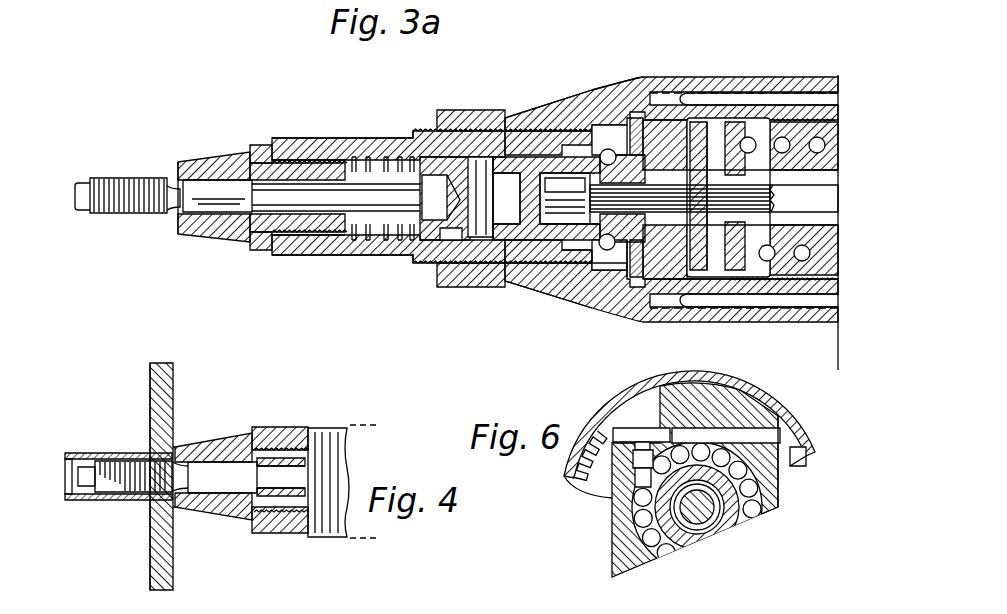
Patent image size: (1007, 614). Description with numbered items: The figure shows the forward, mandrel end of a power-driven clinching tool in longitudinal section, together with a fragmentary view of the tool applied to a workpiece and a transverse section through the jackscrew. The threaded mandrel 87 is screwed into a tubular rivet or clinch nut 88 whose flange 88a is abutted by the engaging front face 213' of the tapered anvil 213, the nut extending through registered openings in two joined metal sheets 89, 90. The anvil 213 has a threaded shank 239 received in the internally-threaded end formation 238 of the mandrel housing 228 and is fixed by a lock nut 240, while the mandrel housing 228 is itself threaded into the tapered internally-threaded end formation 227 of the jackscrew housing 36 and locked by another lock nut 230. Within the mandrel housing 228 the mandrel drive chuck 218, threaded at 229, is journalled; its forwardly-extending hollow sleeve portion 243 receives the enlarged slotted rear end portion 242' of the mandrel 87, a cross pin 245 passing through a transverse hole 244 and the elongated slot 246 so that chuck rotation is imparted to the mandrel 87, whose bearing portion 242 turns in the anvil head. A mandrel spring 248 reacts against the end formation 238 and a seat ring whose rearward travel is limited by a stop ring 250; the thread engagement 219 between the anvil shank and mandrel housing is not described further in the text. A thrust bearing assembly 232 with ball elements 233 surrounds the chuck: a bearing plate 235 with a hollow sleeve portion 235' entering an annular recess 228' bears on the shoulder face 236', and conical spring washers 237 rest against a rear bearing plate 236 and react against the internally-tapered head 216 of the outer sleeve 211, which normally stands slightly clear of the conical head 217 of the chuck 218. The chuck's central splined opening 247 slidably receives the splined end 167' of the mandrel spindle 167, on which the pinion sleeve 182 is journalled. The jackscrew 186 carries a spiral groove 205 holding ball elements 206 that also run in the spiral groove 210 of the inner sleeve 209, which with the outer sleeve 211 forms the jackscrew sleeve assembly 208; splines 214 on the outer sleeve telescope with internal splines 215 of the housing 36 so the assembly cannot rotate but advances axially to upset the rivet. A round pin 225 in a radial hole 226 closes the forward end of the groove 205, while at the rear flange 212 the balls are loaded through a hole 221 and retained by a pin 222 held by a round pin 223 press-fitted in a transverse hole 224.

In FIG. 3A, the jackscrew housing 36 is at (732, 72).
In FIG. 6, the jackscrew housing 36 is at (810, 414).
In FIG. 3A, the threaded mandrel 87 is at (110, 205).
In FIG. 4, the threaded mandrel 87 is at (224, 487).
In FIG. 4, the rivet or clinch nut 88 is at (105, 451).
In FIG. 4, the flange of the rivet or clinch nut 88a is at (180, 446).
In FIG. 4, the metal sheet 89 is at (150, 380).
In FIG. 4, the metal sheet 90 is at (173, 385).
In FIG. 6, the mandrel spindle 167 is at (678, 547).
In FIG. 3A, the splined end of the mandrel spindle 167' is at (714, 199).
In FIG. 3A, the pinion sleeve 182 is at (835, 238).
In FIG. 6, the pinion sleeve 182 is at (712, 534).
In FIG. 3A, the jackscrew 186 is at (790, 282).
In FIG. 6, the jackscrew 186 is at (742, 514).
In FIG. 3A, the spiral groove 205 is at (832, 291).
In FIG. 3A, the ball elements 206 is at (825, 145).
In FIG. 6, the ball elements 206 is at (755, 503).
In FIG. 3A, the jackscrew sleeve assembly 208 is at (842, 117).
In FIG. 3A, the inner externally-threaded sleeve 209 is at (752, 298).
In FIG. 3A, the spiral groove 210 is at (712, 300).
In FIG. 3A, the outer internally-threaded sleeve 211 is at (742, 118).
In FIG. 6, the outer internally-threaded sleeve 211 is at (778, 482).
In FIG. 6, the rear flange 212 is at (628, 580).
In FIG. 3A, the anvil 213 is at (261, 179).
In FIG. 4, the anvil 213 is at (240, 496).
In FIG. 3A, the engaging front face 213' is at (159, 218).
In FIG. 3A, the splines 214 is at (665, 114).
In FIG. 6, the splines 214 is at (792, 470).
In FIG. 3A, the internal splines 215 is at (768, 100).
In FIG. 3A, the internally-tapered head 216 is at (638, 280).
In FIG. 3A, the conical head 217 is at (604, 119).
In FIG. 3A, the mandrel drive chuck 218 is at (548, 162).
In FIG. 3A, the thread 219 is at (340, 258).
In FIG. 6, the hole 221 is at (636, 466).
In FIG. 6, the pin 222 is at (636, 486).
In FIG. 6, the round pin 223 is at (640, 430).
In FIG. 3A, the transverse hole 224 is at (592, 228).
In FIG. 6, the transverse hole 224 is at (732, 433).
In FIG. 3A, the round pin 225 is at (778, 98).
In FIG. 3A, the radial hole 226 is at (748, 168).
In FIG. 3A, the tapered internally-threaded end formation 227 is at (560, 122).
In FIG. 3A, the mandrel housing 228 is at (342, 178).
In FIG. 4, the mandrel housing 228 is at (333, 464).
In FIG. 3A, the annular recess 228' is at (548, 75).
In FIG. 3A, the threads 229 is at (428, 130).
In FIG. 3A, the lock nut 230 is at (460, 112).
In FIG. 3A, the thrust bearing assembly 232 is at (590, 88).
In FIG. 3A, the ball elements 233 is at (580, 272).
In FIG. 3A, the bearing plate 235 is at (514, 265).
In FIG. 3A, the hollow sleeve portion 235' is at (521, 305).
In FIG. 3A, the rear bearing plate 236 is at (604, 290).
In FIG. 3A, the shoulder face 236' is at (551, 306).
In FIG. 3A, the conical drive chuck spring washers 237 is at (605, 278).
In FIG. 3A, the internally-threaded end formation 238 is at (300, 148).
In FIG. 4, the internally-threaded end formation 238 is at (320, 540).
In FIG. 3A, the threaded shank 239 is at (318, 236).
In FIG. 4, the threaded shank 239 is at (283, 426).
In FIG. 3A, the lock nut 240 is at (258, 246).
In FIG. 4, the lock nut 240 is at (272, 534).
In FIG. 3A, the bearing portion 242 is at (191, 165).
In FIG. 3A, the enlarged slotted rear end portion 242' is at (421, 197).
In FIG. 3A, the hollow sleeve portion 243 is at (432, 238).
In FIG. 3A, the transverse hole 244 is at (452, 286).
In FIG. 3A, the cross pin 245 is at (480, 175).
In FIG. 3A, the elongated slot 246 is at (462, 266).
In FIG. 3A, the central splined opening 247 is at (585, 200).
In FIG. 3A, the mandrel spring 248 is at (392, 157).
In FIG. 3A, the stop ring 250 is at (444, 234).